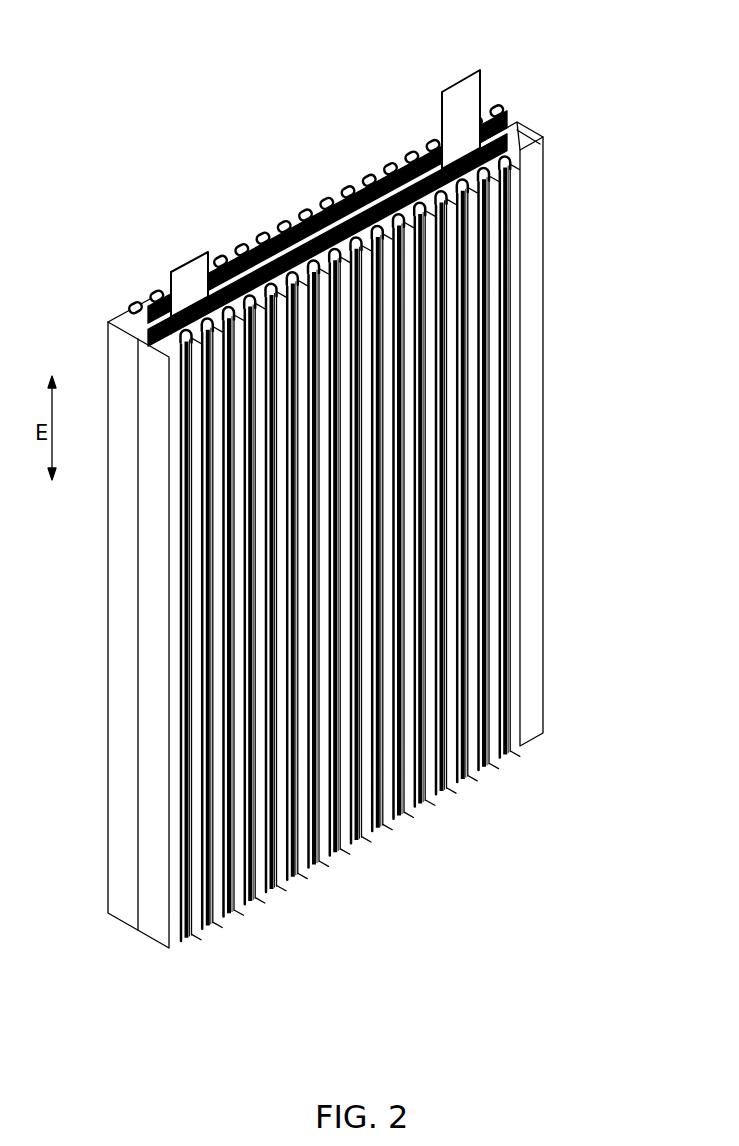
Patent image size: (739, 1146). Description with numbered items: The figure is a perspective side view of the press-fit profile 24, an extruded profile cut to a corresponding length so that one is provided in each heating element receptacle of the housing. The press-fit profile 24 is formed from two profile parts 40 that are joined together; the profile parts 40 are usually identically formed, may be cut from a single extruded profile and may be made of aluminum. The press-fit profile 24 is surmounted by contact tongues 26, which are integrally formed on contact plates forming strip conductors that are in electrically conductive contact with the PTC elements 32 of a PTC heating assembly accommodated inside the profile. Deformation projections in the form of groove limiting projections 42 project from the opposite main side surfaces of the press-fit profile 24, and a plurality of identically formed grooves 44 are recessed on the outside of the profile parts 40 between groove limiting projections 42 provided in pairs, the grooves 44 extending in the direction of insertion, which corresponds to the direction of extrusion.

The press-fit profile 24 is at (426, 76).
The contact tongues 26 is at (190, 283).
The PTC elements 32 is at (311, 200).
The profile parts 40 is at (157, 576).
The groove limiting projections 42 is at (506, 204).
The grooves 44 is at (155, 296).